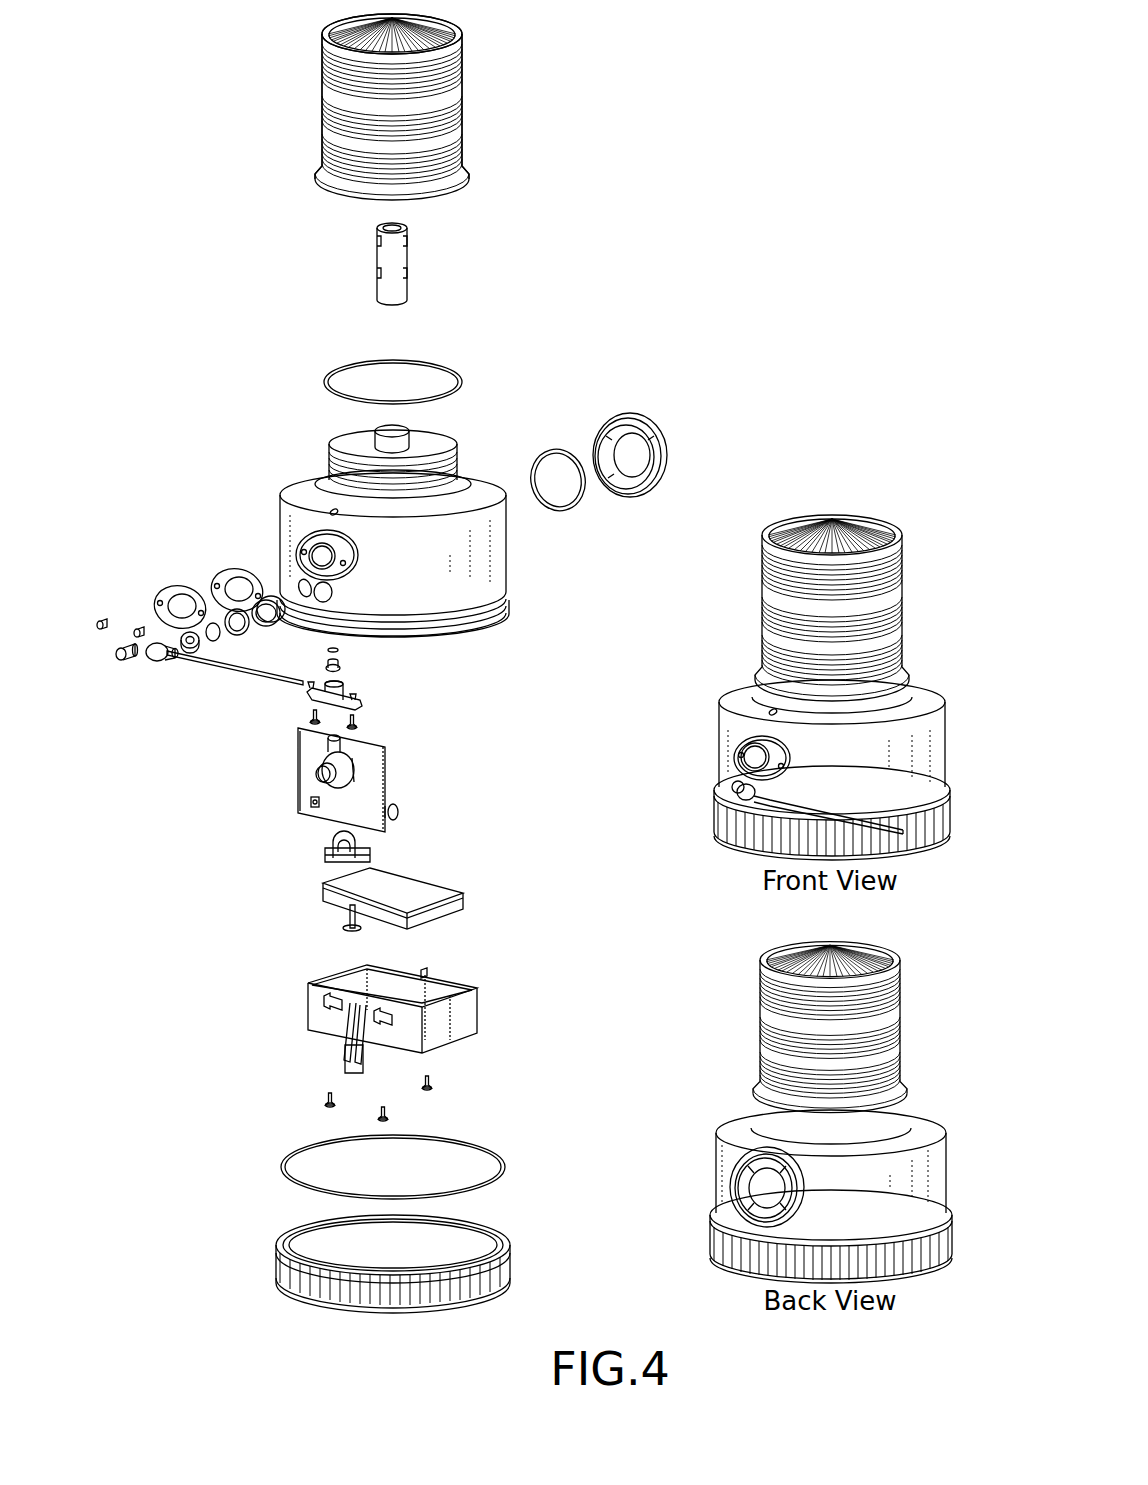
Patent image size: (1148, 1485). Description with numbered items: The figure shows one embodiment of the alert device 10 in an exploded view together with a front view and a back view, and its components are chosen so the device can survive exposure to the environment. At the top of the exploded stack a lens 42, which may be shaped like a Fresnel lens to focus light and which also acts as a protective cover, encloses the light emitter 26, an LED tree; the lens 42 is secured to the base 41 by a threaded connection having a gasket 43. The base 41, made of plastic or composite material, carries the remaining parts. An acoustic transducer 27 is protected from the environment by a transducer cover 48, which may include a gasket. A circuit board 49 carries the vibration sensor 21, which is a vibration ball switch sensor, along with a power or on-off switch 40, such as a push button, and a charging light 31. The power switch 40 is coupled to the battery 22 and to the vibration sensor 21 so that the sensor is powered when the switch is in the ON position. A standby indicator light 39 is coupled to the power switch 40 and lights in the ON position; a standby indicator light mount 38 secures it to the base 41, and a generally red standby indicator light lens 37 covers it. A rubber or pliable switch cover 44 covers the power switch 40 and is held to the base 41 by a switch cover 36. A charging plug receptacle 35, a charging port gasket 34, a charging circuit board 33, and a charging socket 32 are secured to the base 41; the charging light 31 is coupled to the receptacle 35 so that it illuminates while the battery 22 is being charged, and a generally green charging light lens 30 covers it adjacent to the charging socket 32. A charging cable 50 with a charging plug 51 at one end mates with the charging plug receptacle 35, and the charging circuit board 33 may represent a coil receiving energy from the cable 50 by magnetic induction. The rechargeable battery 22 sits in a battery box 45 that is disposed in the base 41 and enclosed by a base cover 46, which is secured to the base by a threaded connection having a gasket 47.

The alert device 10 is at (807, 123).
The vibration sensor 21 is at (373, 775).
The battery 22 is at (330, 900).
The light emitter 26 is at (378, 276).
The acoustic transducer 27 is at (563, 493).
The charging light lens 30 is at (118, 662).
The charging light 31 is at (312, 803).
The charging socket 32 is at (268, 598).
The charging circuit board 33 is at (248, 628).
The charging port gasket 34 is at (215, 642).
The charging plug receptacle 35 is at (190, 650).
The switch cover 36 is at (178, 588).
The standby indicator light lens 37 is at (345, 668).
The standby indicator light mount 38 is at (360, 696).
The standby indicator light 39 is at (345, 742).
The power switch 40 is at (345, 778).
The base 41 is at (290, 492).
The lens 42 is at (320, 97).
The gasket 43 is at (325, 371).
The switch cover 44 is at (232, 568).
The battery box 45 is at (315, 1013).
The base cover 46 is at (280, 1245).
The gasket 47 is at (285, 1152).
The transducer cover 48 is at (660, 482).
The circuit board 49 is at (308, 765).
The charging cable 50 is at (290, 688).
The charging plug 51 is at (150, 660).